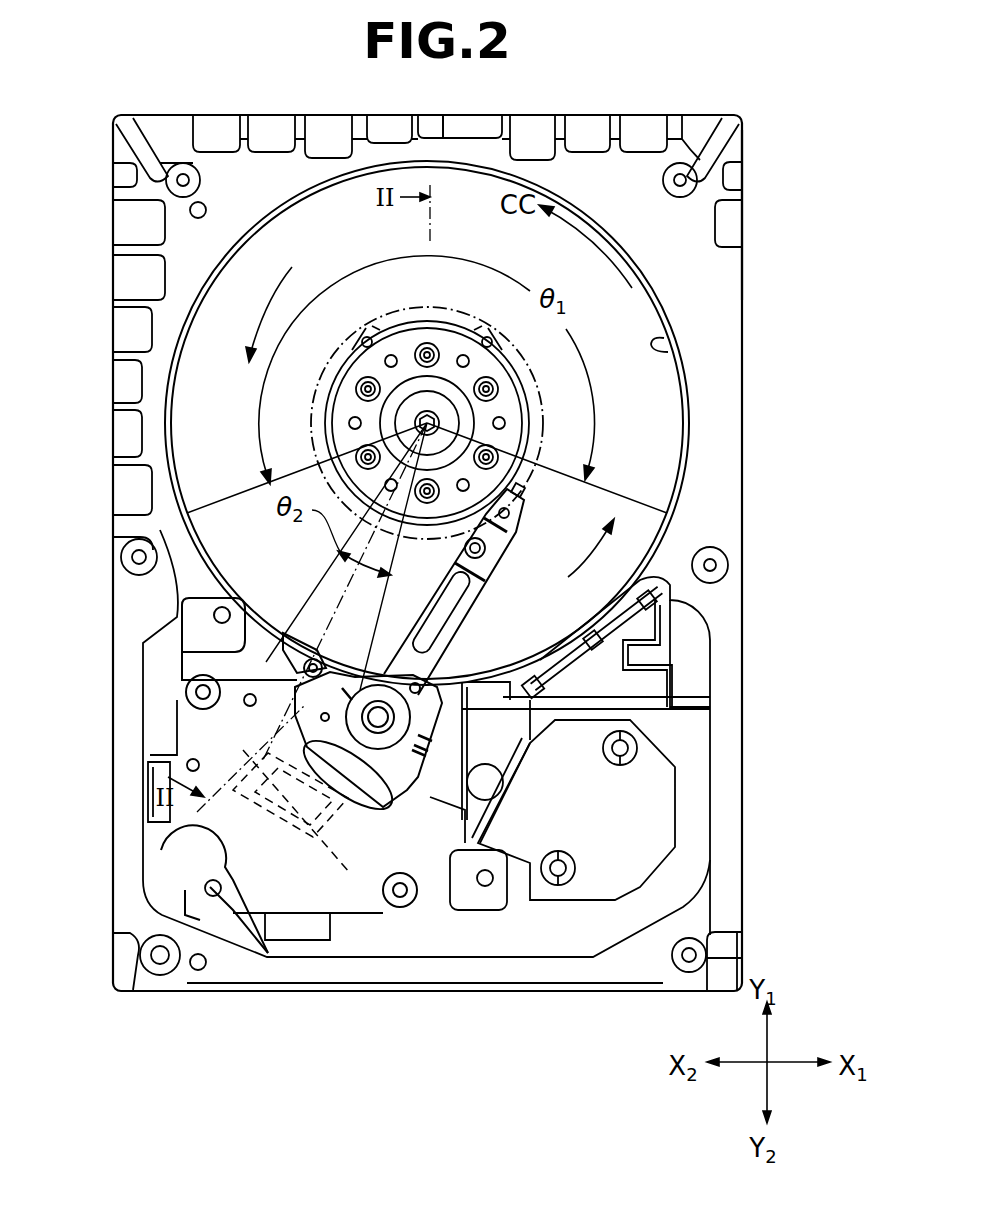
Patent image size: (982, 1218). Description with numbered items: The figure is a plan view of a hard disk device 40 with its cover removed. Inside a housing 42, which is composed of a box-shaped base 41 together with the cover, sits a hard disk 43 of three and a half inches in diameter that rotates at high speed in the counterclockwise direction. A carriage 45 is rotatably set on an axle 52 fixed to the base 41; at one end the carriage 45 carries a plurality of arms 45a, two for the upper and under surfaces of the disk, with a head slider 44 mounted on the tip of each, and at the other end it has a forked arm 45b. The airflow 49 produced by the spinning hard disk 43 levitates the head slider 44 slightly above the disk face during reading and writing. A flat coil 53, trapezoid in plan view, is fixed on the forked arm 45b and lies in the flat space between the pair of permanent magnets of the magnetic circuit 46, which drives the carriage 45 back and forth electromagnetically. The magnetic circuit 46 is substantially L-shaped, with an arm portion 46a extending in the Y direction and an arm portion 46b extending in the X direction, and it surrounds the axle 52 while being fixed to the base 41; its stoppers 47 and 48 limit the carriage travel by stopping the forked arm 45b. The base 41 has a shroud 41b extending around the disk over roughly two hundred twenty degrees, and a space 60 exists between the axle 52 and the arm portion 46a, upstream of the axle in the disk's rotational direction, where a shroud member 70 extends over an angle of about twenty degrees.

The hard disk device 40 is at (757, 110).
The base 41 is at (717, 526).
The shroud 41b is at (655, 348).
The housing 42 is at (750, 247).
The hard disk 43 is at (190, 433).
The head slider 44 is at (522, 492).
The carriage 45 is at (462, 658).
The arms 45a is at (470, 605).
The forked arm 45b is at (392, 820).
The magnetic circuit 46 is at (243, 883).
The arm portion 46a is at (262, 665).
The arm portion 46b is at (458, 832).
The stopper 47 is at (402, 907).
The stopper 48 is at (190, 690).
The airflow 49 is at (272, 297).
The axle 52 is at (379, 700).
The coil 53 is at (350, 800).
The space 60 is at (295, 700).
The shroud member 70 is at (304, 660).